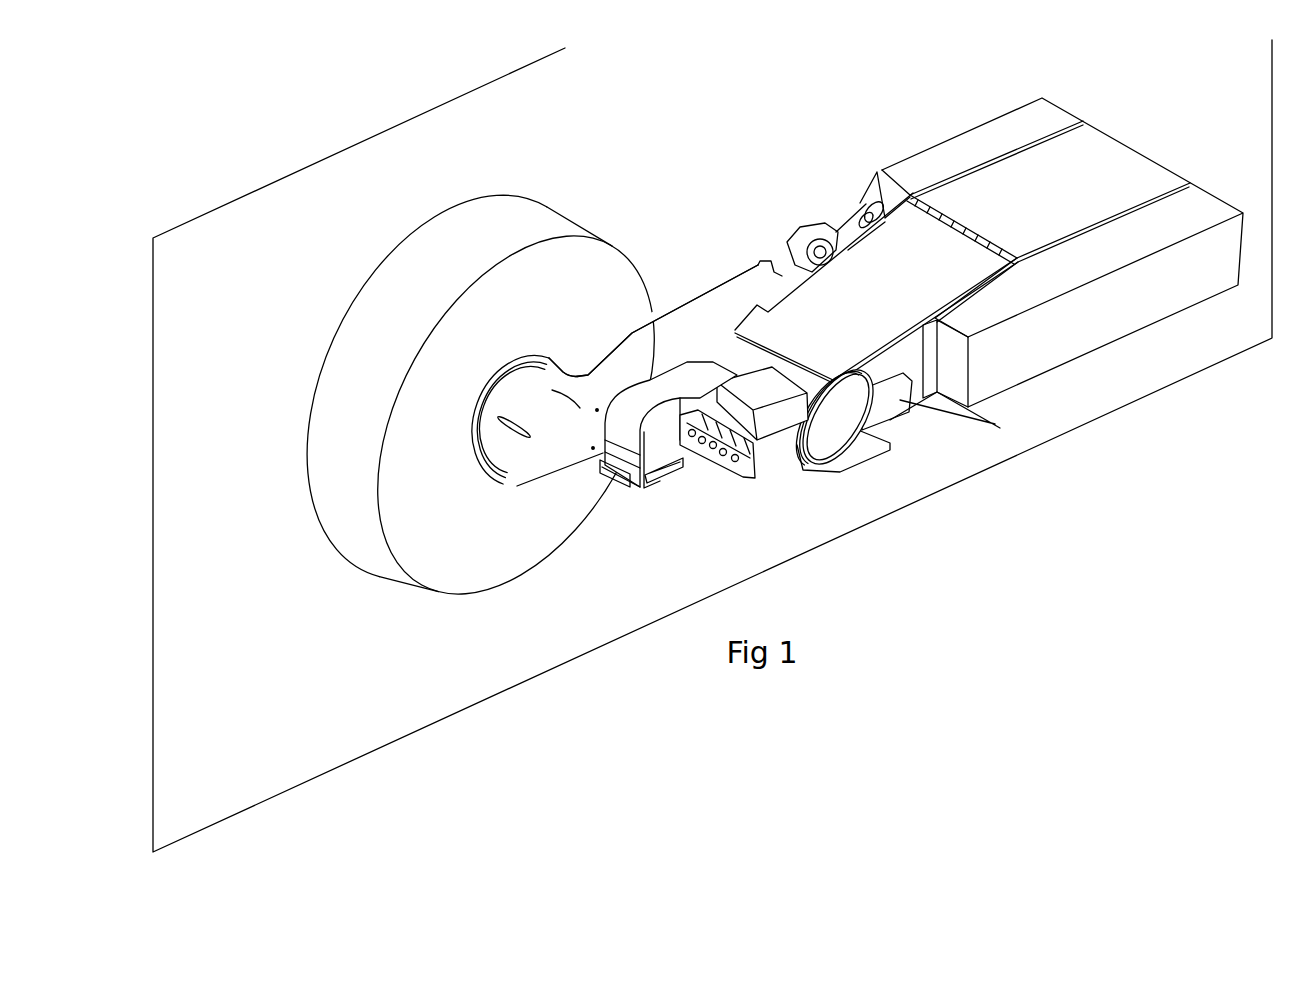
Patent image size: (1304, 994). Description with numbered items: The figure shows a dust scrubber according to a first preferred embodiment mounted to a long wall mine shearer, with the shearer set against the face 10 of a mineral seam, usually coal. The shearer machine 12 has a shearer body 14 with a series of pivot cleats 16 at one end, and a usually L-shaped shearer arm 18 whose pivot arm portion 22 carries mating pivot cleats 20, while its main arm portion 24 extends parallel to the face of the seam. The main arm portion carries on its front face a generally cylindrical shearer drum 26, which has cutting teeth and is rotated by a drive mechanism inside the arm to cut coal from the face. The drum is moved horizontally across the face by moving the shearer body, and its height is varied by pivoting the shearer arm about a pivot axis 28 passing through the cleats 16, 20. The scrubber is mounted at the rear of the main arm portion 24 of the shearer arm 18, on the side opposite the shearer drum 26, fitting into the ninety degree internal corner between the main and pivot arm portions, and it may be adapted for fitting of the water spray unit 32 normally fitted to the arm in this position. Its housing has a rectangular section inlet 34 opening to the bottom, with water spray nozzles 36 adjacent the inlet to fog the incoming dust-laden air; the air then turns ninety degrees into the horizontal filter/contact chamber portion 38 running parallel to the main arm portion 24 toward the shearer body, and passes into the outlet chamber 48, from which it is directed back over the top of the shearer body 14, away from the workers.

The face 10 is at (318, 197).
The shearer machine 12 is at (823, 168).
The shearer body 14 is at (972, 147).
The pivot cleats 16 is at (927, 360).
The shearer arm 18 is at (733, 255).
The mating pivot cleats 20 is at (882, 362).
The pivot arm portion 22 is at (832, 440).
The main arm portion 24 is at (592, 378).
The shearer drum 26 is at (350, 397).
The pivot axis 28 is at (972, 430).
The water spray unit 32 is at (736, 470).
The inlet 34 is at (642, 478).
The water spray nozzles 36 is at (668, 487).
The filter/contact chamber portion 38 is at (690, 363).
The outlet chamber 48 is at (770, 460).